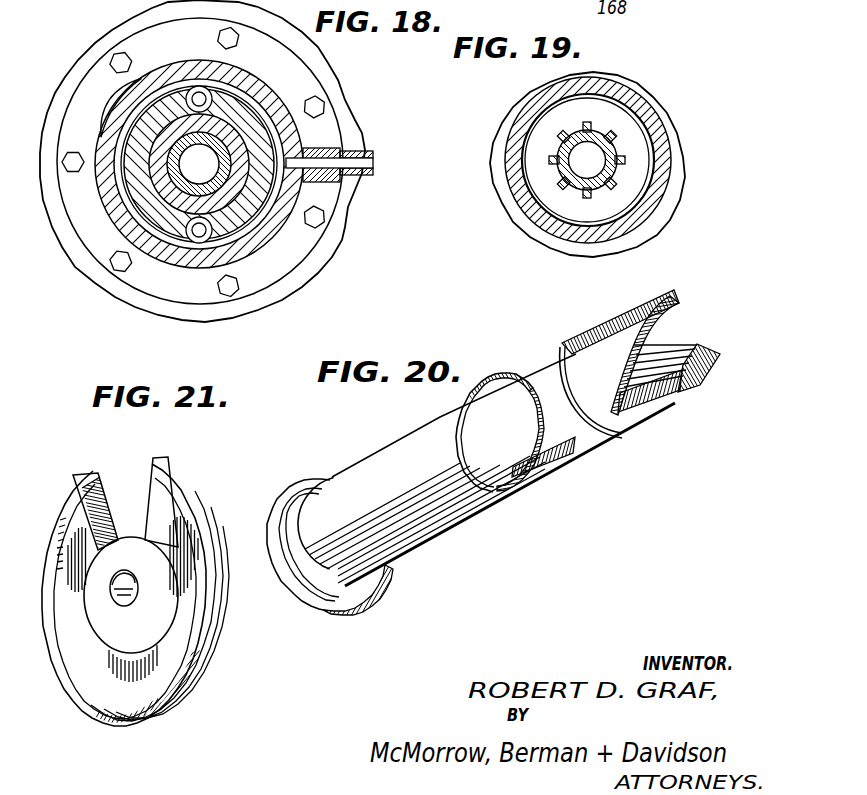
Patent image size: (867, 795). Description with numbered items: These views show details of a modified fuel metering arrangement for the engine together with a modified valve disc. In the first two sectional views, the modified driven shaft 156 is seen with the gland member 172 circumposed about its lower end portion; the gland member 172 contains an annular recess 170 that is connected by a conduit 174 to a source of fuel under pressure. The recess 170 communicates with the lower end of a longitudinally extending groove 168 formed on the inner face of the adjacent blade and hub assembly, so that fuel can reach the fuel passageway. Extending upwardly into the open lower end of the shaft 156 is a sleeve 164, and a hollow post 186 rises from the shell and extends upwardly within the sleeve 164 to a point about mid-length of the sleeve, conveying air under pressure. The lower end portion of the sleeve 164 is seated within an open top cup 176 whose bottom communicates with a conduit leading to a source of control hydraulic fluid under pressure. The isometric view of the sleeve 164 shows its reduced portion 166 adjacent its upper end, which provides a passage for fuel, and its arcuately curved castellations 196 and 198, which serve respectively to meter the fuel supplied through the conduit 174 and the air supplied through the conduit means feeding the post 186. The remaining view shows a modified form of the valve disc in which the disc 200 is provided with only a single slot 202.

In FIG. 18, the shaft 156 is at (135, 182).
In FIG. 18, the sleeve 164 is at (175, 188).
In FIG. 19, the sleeve 164 is at (596, 133).
In FIG. 20, the sleeve 164 is at (442, 427).
In FIG. 20, the reduced portion 166 is at (543, 373).
In FIG. 18, the groove 168 is at (197, 238).
In FIG. 18, the annular recess 170 is at (119, 137).
In FIG. 18, the gland member 172 is at (273, 99).
In FIG. 18, the conduit 174 is at (369, 156).
In FIG. 19, the open top cup 176 is at (649, 111).
In FIG. 18, the hollow post 186 is at (180, 165).
In FIG. 20, the castellation 196 is at (524, 409).
In FIG. 20, the castellation 198 is at (655, 335).
In FIG. 21, the disc 200 is at (203, 483).
In FIG. 21, the slot 202 is at (140, 487).